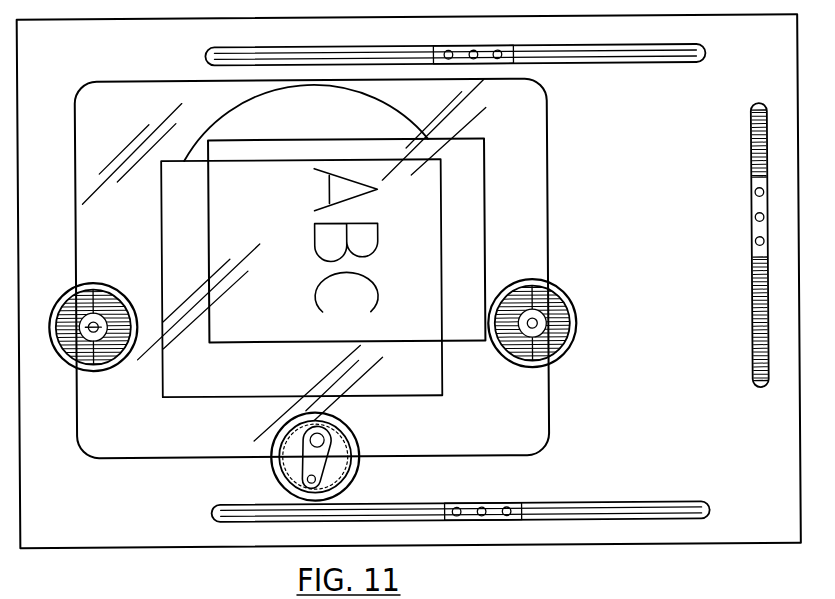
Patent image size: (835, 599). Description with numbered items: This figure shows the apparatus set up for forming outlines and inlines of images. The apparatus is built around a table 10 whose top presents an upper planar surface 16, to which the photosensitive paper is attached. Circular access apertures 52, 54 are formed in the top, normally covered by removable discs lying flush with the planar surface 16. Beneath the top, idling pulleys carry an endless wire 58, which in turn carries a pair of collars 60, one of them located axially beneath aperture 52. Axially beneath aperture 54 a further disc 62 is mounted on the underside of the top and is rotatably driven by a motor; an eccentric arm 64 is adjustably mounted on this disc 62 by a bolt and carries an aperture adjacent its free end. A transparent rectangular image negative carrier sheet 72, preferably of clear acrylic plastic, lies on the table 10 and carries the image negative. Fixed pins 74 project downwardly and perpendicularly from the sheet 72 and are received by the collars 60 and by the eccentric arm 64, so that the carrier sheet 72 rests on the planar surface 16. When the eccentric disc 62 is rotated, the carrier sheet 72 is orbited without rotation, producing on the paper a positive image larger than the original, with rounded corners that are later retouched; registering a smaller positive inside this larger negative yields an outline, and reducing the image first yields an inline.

The table 10 is at (651, 546).
The upper planar surface 16 is at (571, 534).
The circular access aperture 52 is at (547, 321).
The circular access aperture 54 is at (294, 446).
The endless wire 58 is at (531, 319).
The collar 60 is at (544, 324).
The disc 62 is at (318, 456).
The eccentric arm 64 is at (308, 467).
The image negative carrier sheet 72 is at (530, 421).
The fixed pin 74 is at (538, 318).